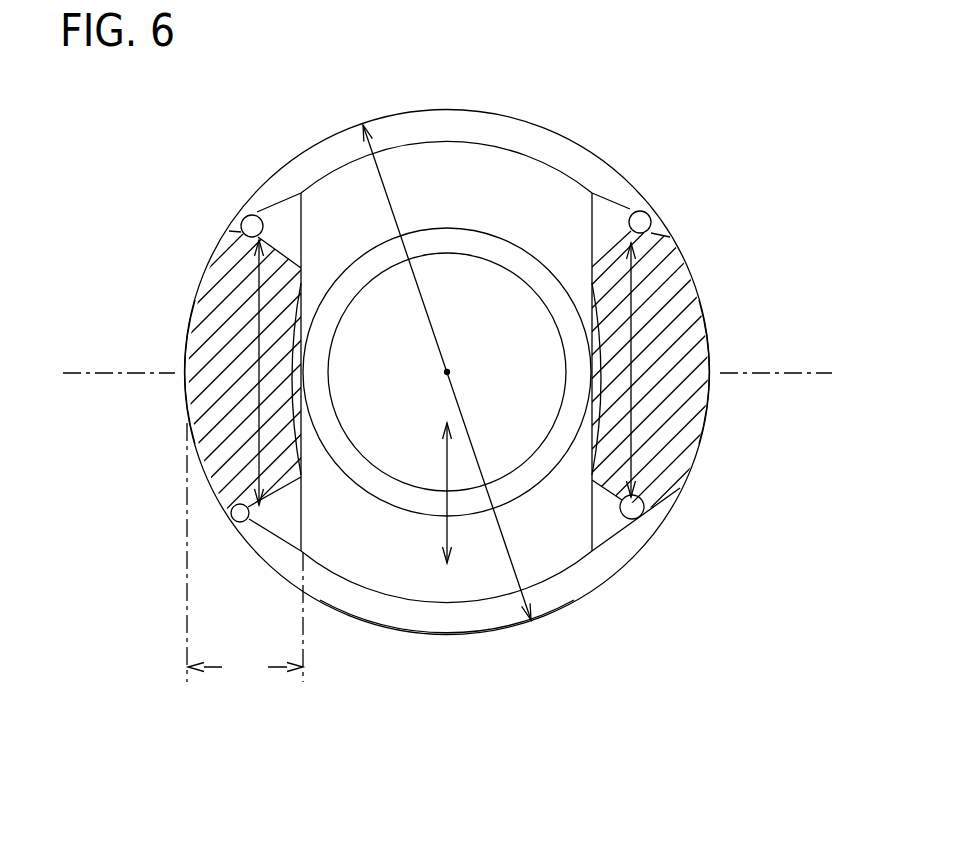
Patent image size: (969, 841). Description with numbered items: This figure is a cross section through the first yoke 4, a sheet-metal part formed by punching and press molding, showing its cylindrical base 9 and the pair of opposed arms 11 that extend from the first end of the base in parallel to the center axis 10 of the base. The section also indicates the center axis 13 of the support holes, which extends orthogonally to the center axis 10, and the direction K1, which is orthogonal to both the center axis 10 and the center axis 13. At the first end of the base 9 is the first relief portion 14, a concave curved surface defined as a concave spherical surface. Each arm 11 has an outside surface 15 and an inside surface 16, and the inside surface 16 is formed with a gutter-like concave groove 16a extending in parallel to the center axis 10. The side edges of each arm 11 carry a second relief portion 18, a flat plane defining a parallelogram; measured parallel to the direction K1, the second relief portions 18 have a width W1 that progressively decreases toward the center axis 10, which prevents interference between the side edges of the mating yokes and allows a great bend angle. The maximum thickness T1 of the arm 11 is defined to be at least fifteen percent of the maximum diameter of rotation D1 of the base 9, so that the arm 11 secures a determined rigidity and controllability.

The first yoke 4 is at (472, 90).
The cylindrical base 9 is at (490, 632).
The center axis 10 is at (450, 375).
The arms 11 is at (230, 263).
The center axis of the support hole 13 is at (90, 373).
The first relief portion 14 is at (520, 137).
The outside surface 15 is at (188, 335).
The inside surface 16 is at (302, 284).
The concave groove 16a is at (292, 388).
The second relief portion 18 is at (243, 218).
The maximum diameter of rotation D1 is at (388, 195).
The width of the second relief portions W1 is at (235, 312).
The direction K1 is at (447, 524).
The maximum thickness of the arm T1 is at (245, 552).